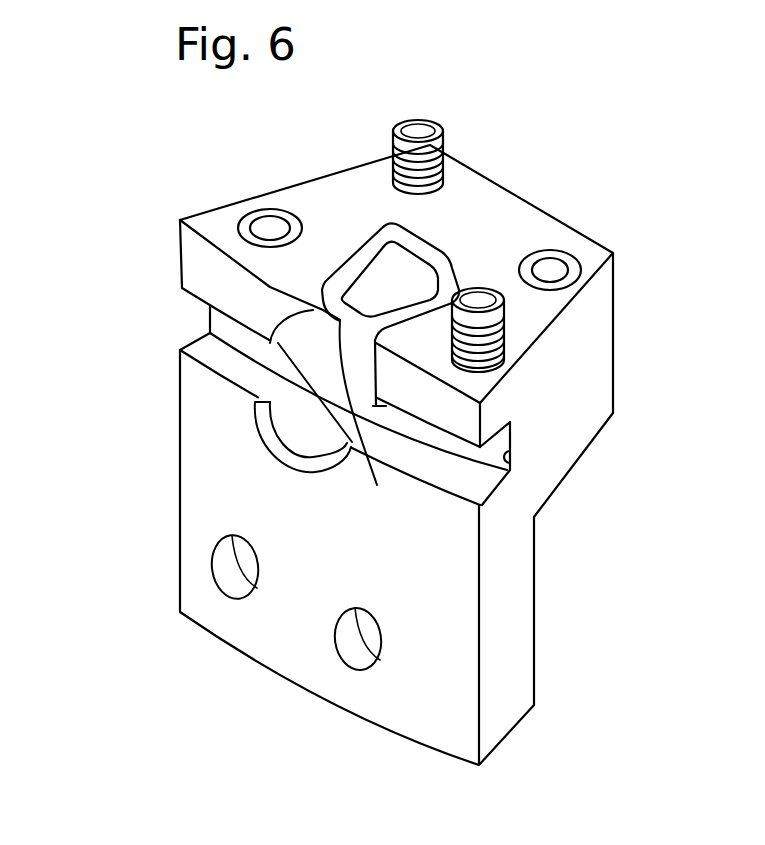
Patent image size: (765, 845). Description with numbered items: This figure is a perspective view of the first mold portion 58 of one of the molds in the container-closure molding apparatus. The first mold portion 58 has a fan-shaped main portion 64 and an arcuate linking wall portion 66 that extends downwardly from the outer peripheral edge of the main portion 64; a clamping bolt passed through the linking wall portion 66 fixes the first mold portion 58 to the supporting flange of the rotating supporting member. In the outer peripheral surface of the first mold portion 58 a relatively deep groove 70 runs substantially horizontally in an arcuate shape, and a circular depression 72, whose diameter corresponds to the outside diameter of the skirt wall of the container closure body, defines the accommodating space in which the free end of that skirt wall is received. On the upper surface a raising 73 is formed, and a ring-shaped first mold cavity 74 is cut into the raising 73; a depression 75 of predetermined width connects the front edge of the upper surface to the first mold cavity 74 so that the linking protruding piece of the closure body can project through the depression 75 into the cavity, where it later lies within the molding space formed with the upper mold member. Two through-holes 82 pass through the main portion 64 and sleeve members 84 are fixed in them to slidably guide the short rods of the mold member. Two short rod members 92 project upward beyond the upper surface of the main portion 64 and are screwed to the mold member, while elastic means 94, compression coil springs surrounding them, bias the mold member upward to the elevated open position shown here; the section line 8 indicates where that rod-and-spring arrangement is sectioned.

The section line 8- 8 is at (158, 268).
The first mold portion 58 is at (158, 248).
The fan-shaped main portion 64 is at (350, 177).
The arcuate linking wall portion 66 is at (415, 735).
The groove 70 is at (510, 468).
The circular depression 72 is at (273, 428).
The raising 73 is at (433, 242).
The first mold cavity 74 is at (445, 272).
The depression 75 is at (334, 413).
The through-holes 82 is at (265, 217).
The sleeve members 84 is at (240, 225).
The short rod member 92 is at (422, 122).
The elastic means 94 is at (445, 165).